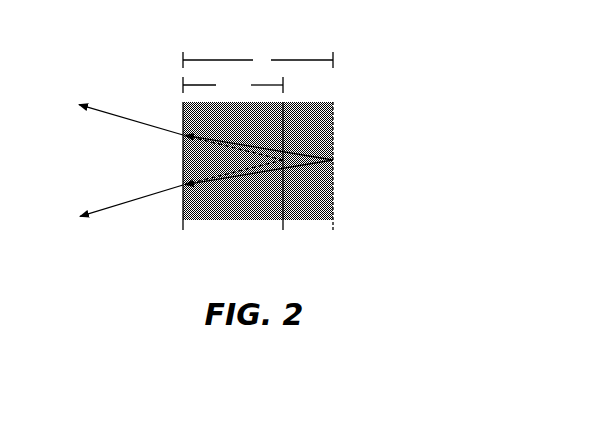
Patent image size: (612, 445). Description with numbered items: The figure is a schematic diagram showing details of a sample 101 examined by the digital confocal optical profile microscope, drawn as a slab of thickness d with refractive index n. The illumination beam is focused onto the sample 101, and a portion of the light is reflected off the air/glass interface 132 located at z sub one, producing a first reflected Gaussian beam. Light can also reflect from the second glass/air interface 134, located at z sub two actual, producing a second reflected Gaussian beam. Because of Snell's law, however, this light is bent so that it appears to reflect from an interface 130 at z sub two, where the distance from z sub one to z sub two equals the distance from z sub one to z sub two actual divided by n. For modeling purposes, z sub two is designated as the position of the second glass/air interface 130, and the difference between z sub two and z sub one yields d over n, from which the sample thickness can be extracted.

The sample 101 is at (388, 38).
The interface at z2 130 is at (283, 122).
The air/glass interface 132 is at (182, 163).
The second glass/air interface 134 is at (333, 208).